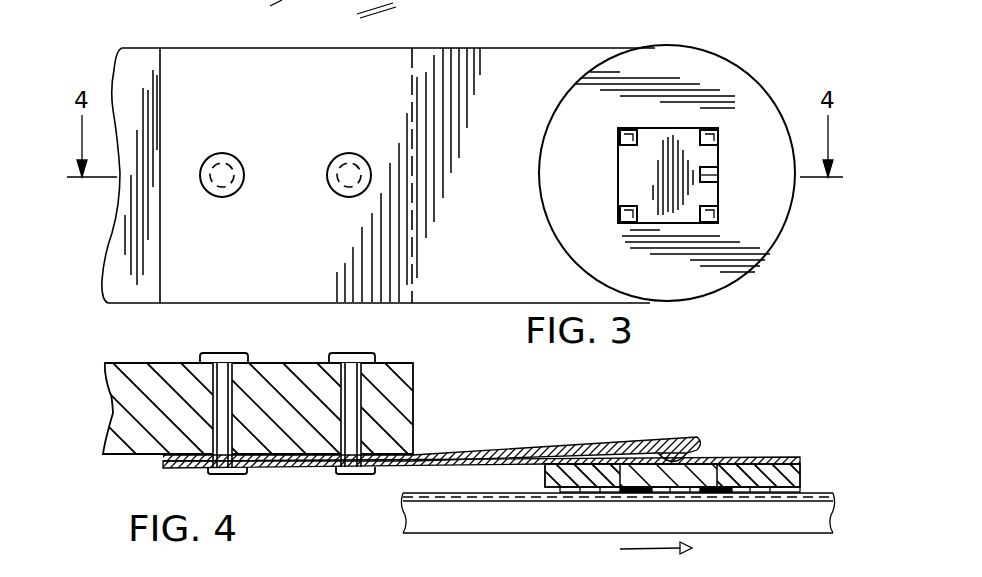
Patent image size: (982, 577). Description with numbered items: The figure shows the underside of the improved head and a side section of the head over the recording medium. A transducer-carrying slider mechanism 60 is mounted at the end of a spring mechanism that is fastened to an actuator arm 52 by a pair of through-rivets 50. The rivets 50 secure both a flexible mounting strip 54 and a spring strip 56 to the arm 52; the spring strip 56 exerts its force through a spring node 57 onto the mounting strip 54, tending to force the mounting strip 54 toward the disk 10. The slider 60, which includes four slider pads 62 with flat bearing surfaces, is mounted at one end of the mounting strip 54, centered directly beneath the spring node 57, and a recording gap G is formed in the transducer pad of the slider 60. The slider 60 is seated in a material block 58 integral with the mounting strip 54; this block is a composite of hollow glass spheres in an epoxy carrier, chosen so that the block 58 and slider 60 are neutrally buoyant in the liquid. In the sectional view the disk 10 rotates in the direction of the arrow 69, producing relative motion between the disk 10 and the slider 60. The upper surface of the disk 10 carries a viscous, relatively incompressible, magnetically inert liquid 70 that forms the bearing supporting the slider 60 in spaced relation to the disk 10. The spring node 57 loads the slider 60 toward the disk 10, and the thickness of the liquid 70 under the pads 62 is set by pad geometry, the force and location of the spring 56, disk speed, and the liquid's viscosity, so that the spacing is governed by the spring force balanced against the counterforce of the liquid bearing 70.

In FIG. 4, the disk 10 is at (565, 540).
In FIG. 3, the through-rivets 50 is at (335, 160).
In FIG. 4, the through-rivets 50 is at (330, 353).
In FIG. 3, the actuator arm 52 is at (143, 50).
In FIG. 4, the actuator arm 52 is at (150, 363).
In FIG. 3, the mounting strip 54 is at (523, 65).
In FIG. 4, the mounting strip 54 is at (748, 457).
In FIG. 4, the spring strip 56 is at (566, 444).
In FIG. 4, the spring node 57 is at (666, 452).
In FIG. 3, the material block 58 is at (652, 62).
In FIG. 4, the material block 58 is at (800, 478).
In FIG. 3, the slider mechanism 60 is at (672, 135).
In FIG. 4, the slider mechanism 60 is at (700, 456).
In FIG. 3, the slider pads 62 is at (712, 136).
In FIG. 4, the slider pads 62 is at (705, 492).
In FIG. 4, the arrow 69 is at (638, 554).
In FIG. 4, the viscous liquid 70 is at (812, 493).
In FIG. 3, the recording gap G is at (721, 186).